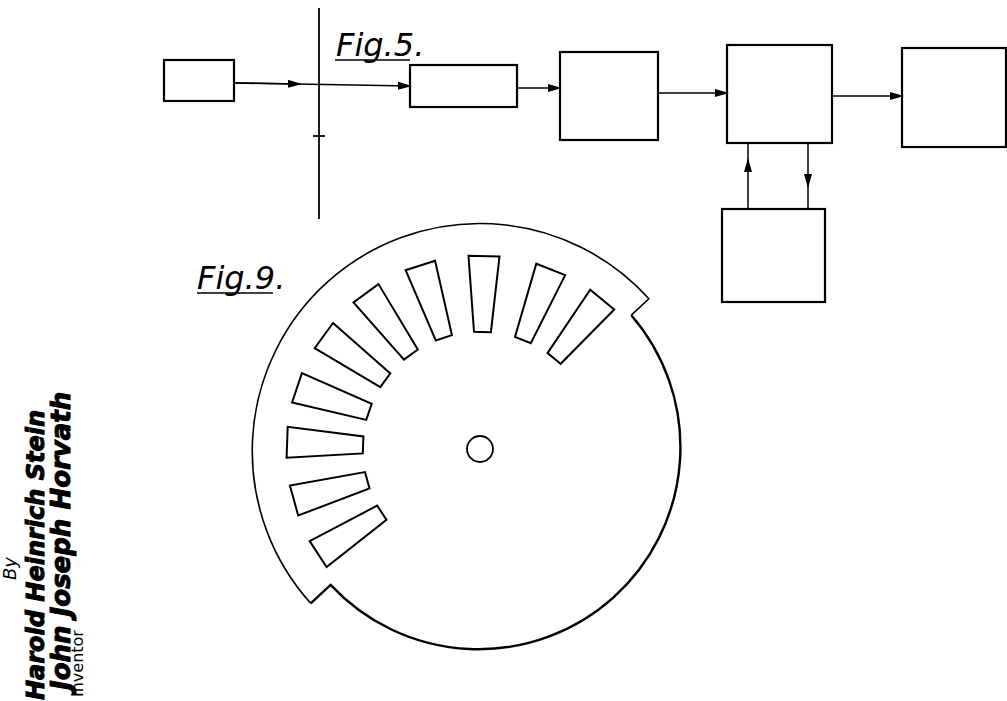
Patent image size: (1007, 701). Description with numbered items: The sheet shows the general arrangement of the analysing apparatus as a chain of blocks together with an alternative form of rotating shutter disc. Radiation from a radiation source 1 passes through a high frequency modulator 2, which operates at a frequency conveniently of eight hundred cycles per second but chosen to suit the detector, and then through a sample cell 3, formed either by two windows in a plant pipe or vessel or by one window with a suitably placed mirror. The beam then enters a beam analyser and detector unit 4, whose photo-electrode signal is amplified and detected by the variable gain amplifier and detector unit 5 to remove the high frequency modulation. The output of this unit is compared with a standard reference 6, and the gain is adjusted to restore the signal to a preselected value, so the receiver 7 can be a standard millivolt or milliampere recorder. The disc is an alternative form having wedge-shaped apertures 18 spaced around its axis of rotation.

In FIG. 5, the radiation source 1 is at (205, 73).
In FIG. 9, the radiation source 1 is at (491, 439).
In FIG. 5, the high frequency modulator 2 is at (313, 166).
In FIG. 5, the sample cell 3 is at (492, 90).
In FIG. 5, the beam analyser and detector unit 4 is at (620, 120).
In FIG. 5, the variable gain amplifier and detector unit 5 is at (737, 51).
In FIG. 5, the standard reference 6 is at (817, 225).
In FIG. 9, the standard reference 6 is at (648, 527).
In FIG. 5, the receiver 7 is at (978, 127).
In FIG. 9, the apertures 18 is at (333, 335).